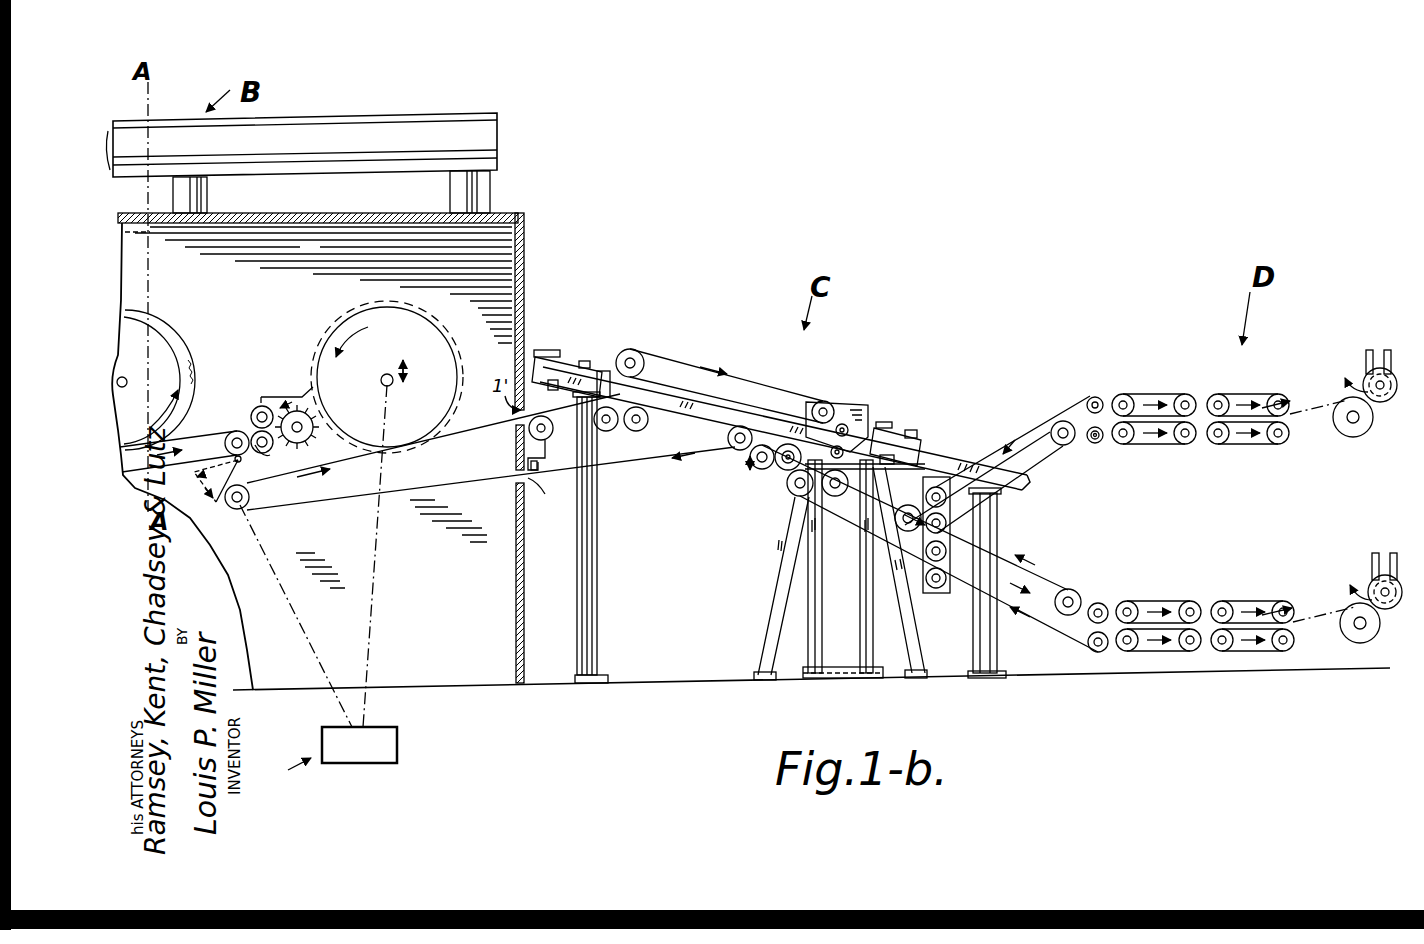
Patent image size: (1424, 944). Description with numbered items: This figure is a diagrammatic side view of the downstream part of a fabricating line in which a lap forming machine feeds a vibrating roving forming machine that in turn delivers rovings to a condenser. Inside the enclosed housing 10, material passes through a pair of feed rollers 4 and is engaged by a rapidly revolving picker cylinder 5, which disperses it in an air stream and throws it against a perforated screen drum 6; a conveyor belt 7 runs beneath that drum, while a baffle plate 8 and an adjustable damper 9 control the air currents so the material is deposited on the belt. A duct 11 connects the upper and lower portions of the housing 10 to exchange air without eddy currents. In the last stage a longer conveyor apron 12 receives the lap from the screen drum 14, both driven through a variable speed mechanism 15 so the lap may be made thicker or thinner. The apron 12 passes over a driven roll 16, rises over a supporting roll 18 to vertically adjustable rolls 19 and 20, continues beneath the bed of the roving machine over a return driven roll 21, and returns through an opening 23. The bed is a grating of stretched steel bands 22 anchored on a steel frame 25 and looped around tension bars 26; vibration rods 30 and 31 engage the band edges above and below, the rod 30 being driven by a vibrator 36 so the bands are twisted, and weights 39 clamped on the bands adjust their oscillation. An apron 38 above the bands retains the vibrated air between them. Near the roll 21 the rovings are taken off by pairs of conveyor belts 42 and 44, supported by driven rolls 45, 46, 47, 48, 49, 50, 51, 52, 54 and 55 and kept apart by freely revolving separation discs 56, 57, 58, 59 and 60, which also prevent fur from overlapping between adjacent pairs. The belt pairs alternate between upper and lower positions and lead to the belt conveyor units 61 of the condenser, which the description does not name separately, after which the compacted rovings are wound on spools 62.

The feed rollers 4 is at (253, 418).
The picker cylinder 5 is at (306, 434).
The screen drum 6 is at (168, 335).
The conveyor belt 7 is at (190, 440).
The baffle plate 8 is at (332, 383).
The adjustable damper 9 is at (217, 479).
The housing 10 is at (521, 249).
The duct 11 is at (330, 121).
The conveyor apron 12 is at (488, 428).
The screen drum 14 is at (412, 312).
The variable speed mechanism 15 is at (337, 772).
The driven roll 16 is at (236, 509).
The supporting roll 18 is at (546, 441).
The adjustable roll 19 is at (608, 431).
The adjustable roll 20 is at (640, 429).
The return driven roll 21 is at (728, 438).
The steel bands 22 is at (668, 398).
The opening 23 is at (550, 497).
The steel frame 25 is at (977, 471).
The tension bars 26 is at (540, 357).
The vibration rod 30 is at (844, 424).
The vibration rod 31 is at (843, 449).
The vibrator 36 is at (880, 405).
The apron 38 is at (735, 378).
The weights 39 is at (603, 370).
The conveyor belts 42 is at (926, 494).
The conveyor belts 44 is at (880, 525).
The roll 45 is at (788, 444).
The roll 46 is at (930, 488).
The roll 47 is at (1096, 397).
The roll 48 is at (950, 522).
The roll 49 is at (757, 469).
The roll 50 is at (950, 563).
The roll 51 is at (1096, 444).
The roll 52 is at (940, 588).
The roll 54 is at (1105, 605).
The roll 55 is at (1096, 653).
The separation disc 56 is at (797, 496).
The separation disc 57 is at (838, 497).
The separation disc 58 is at (909, 532).
The separation disc 59 is at (1061, 420).
The separation disc 60 is at (1077, 596).
The belt conveyors 61 is at (1127, 398).
The spools 62 is at (1377, 367).